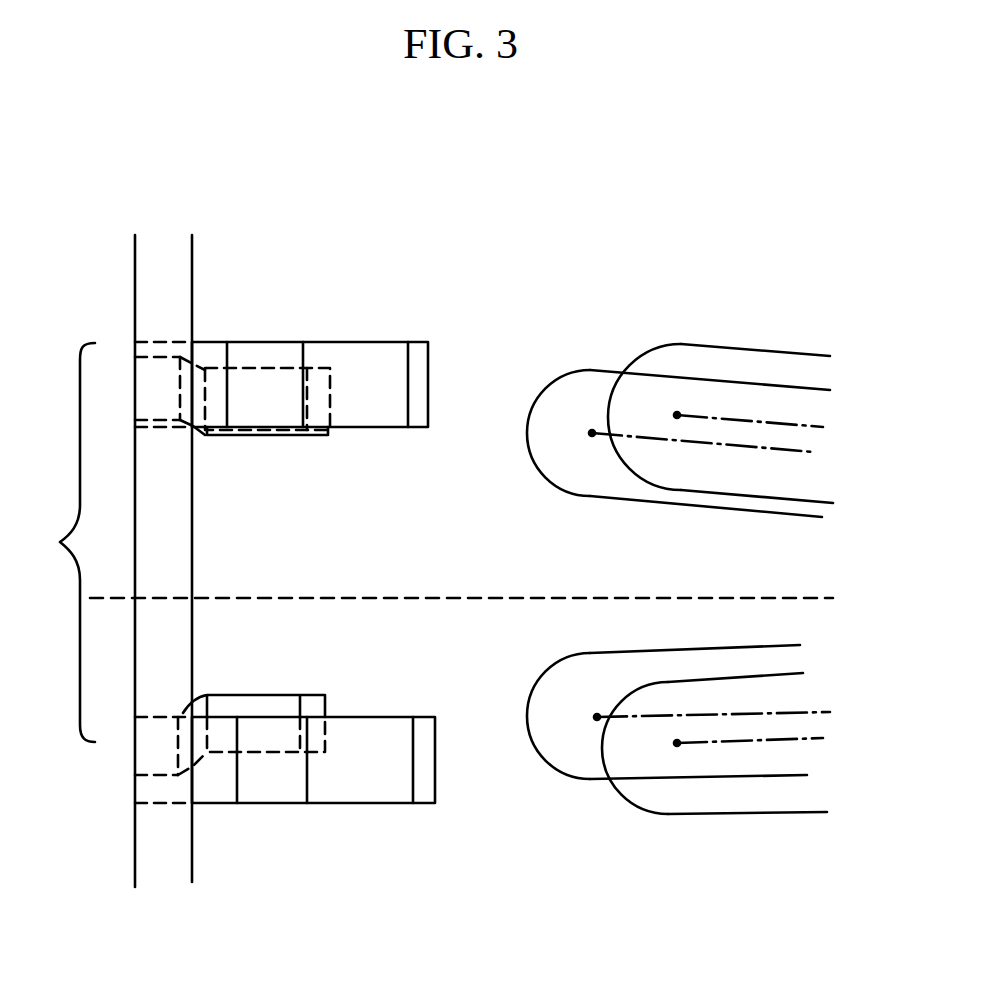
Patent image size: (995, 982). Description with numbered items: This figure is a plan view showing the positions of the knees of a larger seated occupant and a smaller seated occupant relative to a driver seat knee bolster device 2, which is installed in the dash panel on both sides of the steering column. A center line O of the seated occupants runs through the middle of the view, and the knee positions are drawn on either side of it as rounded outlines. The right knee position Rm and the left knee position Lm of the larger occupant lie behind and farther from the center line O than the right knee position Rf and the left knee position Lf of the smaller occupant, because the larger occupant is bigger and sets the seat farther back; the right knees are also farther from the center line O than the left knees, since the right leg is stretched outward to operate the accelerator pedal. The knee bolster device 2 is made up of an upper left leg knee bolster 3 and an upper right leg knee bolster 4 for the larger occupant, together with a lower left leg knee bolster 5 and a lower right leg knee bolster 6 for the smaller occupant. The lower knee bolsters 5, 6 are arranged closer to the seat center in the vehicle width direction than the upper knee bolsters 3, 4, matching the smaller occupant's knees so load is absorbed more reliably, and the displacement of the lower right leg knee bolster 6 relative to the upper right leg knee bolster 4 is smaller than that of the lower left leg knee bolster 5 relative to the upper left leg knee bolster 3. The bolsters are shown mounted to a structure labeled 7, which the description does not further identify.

The driver seat knee bolster device 2 is at (60, 542).
The upper left leg knee bolster 3 is at (348, 785).
The upper right leg knee bolster 4 is at (330, 345).
The lower left leg knee bolster 5 is at (240, 697).
The lower right leg knee bolster 6 is at (251, 440).
The mounting wall 7 is at (150, 848).
The center line O is at (790, 593).
The position of the right knee of the seated occupant F Rf is at (592, 433).
The position of the right knee of the seated occupant M Rm is at (677, 415).
The position of the left knee of the seated occupant F Lf is at (597, 717).
The position of the left knee of the seated occupant M Lm is at (677, 743).